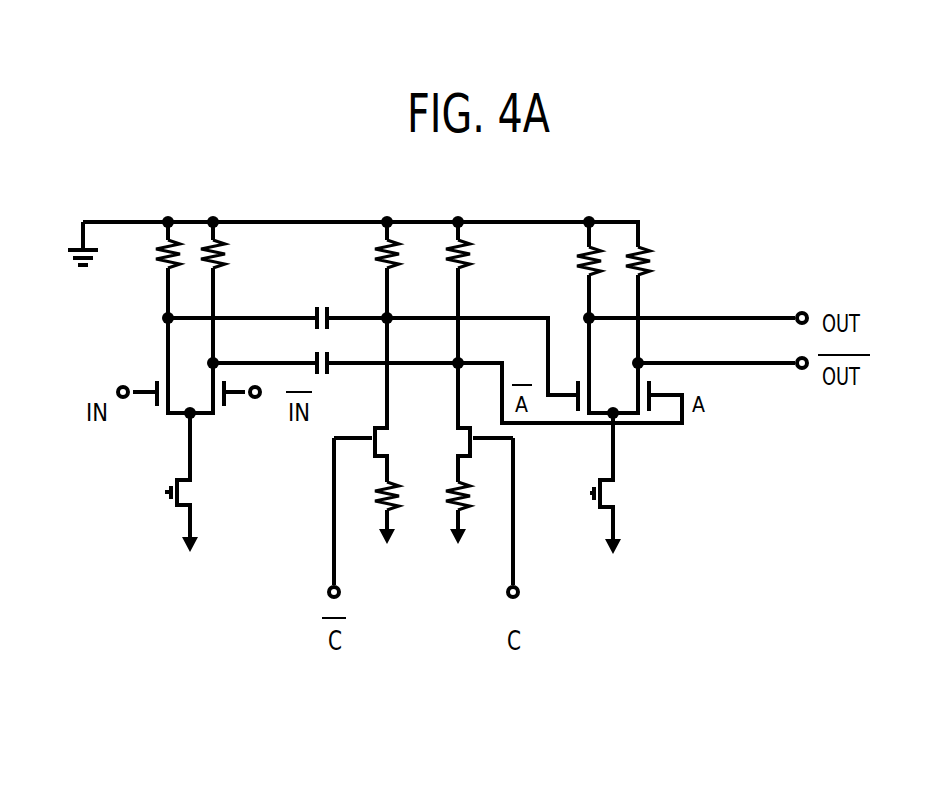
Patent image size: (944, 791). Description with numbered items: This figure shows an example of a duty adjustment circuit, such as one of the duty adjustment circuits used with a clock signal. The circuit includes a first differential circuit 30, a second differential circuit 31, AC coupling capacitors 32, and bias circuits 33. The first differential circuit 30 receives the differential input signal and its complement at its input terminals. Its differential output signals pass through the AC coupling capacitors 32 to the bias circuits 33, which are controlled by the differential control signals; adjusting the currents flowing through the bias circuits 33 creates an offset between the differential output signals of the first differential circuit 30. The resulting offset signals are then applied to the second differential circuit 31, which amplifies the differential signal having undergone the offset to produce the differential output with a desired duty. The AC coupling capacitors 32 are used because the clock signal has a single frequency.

The first differential circuit 30 is at (189, 418).
The second differential circuit 31 is at (622, 424).
The AC coupling capacitors 32 is at (325, 322).
The bias circuits 33 is at (473, 545).